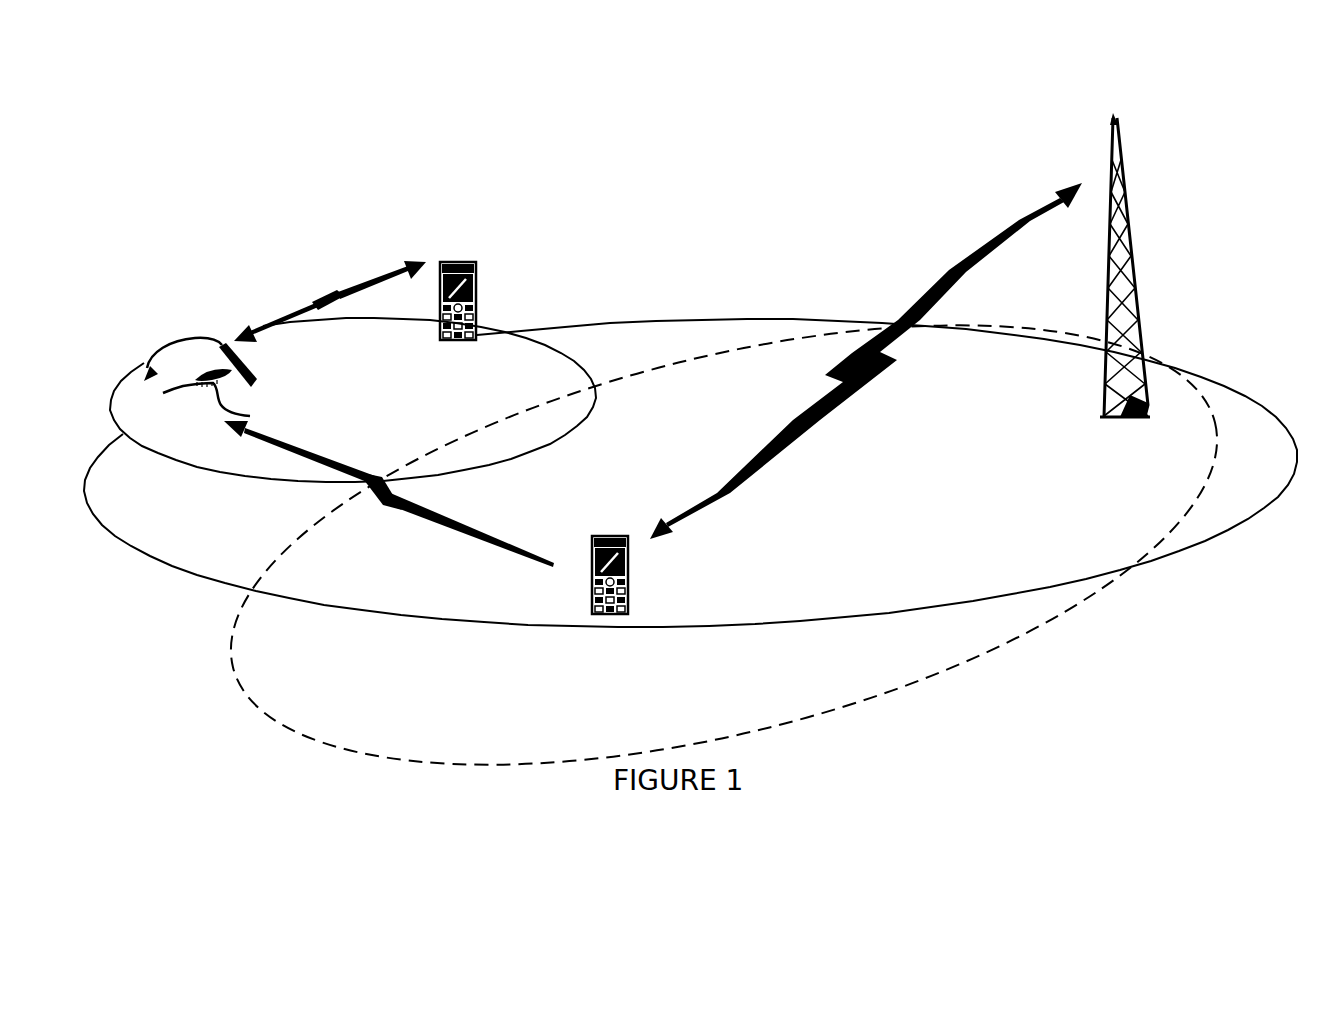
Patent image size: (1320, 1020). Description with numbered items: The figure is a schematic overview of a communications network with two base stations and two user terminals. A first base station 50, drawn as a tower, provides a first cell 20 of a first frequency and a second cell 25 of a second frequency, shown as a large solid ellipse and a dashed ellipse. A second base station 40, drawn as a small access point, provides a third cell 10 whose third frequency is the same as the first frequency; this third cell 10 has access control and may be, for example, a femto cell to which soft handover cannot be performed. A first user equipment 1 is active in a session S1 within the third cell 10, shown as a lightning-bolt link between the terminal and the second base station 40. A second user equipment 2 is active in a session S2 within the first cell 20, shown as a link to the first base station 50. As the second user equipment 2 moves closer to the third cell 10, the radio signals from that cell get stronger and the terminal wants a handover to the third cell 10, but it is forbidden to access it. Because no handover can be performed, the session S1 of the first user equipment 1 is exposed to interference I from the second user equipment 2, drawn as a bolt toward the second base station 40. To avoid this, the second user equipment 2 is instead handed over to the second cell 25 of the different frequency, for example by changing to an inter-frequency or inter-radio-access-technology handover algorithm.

The first user equipment 1 is at (473, 267).
The second user equipment 2 is at (590, 573).
The third cell 10 is at (380, 390).
The first cell 20 is at (876, 493).
The second cell 25 is at (723, 677).
The second base station 40 is at (173, 353).
The first base station 50 is at (1130, 253).
The session S1 is at (337, 290).
The session S2 is at (827, 370).
The interference I is at (358, 483).